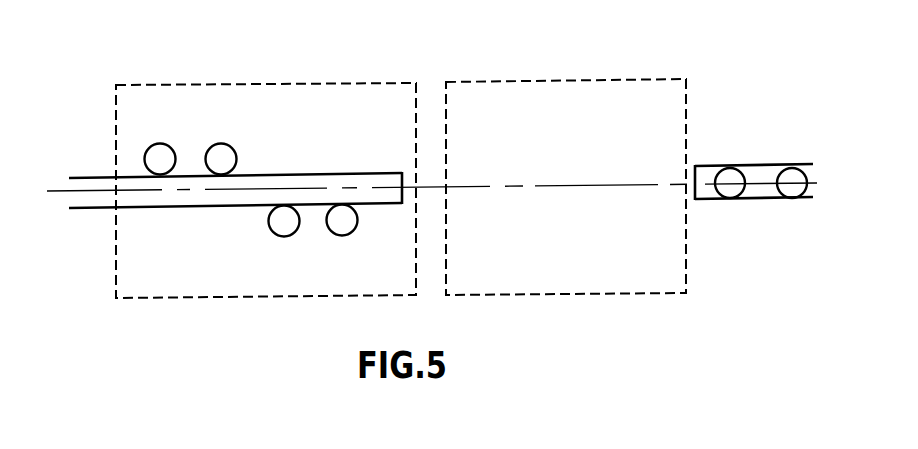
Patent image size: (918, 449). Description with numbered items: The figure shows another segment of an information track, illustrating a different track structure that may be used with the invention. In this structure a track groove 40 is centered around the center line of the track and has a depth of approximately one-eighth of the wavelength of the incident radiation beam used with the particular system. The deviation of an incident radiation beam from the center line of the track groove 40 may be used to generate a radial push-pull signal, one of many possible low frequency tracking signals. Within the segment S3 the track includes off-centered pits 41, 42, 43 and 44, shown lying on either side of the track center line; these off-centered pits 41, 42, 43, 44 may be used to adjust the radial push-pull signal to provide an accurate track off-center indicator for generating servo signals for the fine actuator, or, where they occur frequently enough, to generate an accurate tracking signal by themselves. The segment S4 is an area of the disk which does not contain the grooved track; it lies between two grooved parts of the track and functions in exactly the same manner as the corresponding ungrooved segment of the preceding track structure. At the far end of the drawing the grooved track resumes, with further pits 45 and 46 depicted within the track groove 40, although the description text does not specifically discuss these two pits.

The track groove 40 is at (714, 139).
The off-centered pit 41 is at (157, 152).
The off-centered pit 42 is at (225, 150).
The off-centered pit 43 is at (278, 221).
The off-centered pit 44 is at (346, 237).
The roller 45 is at (724, 200).
The roller 46 is at (797, 163).
The segment S3 is at (265, 83).
The segment S4 is at (533, 82).